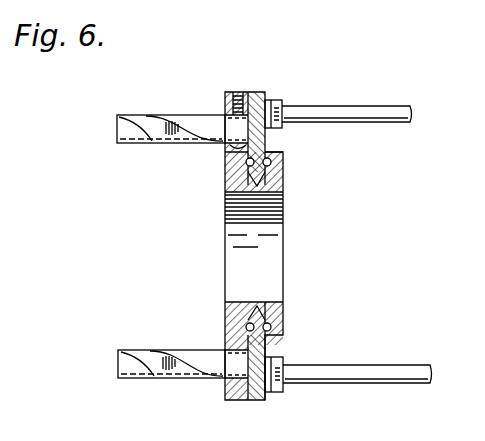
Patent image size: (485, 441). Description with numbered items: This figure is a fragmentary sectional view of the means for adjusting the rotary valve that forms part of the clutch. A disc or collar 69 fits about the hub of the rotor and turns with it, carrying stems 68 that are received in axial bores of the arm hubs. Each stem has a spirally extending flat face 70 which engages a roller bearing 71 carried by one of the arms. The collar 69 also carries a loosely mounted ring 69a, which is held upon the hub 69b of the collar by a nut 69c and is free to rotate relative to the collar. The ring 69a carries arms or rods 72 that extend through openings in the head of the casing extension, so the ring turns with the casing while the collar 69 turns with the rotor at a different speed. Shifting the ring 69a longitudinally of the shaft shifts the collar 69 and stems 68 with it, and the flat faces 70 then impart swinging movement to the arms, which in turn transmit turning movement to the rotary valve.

The stem 68 is at (201, 115).
The disc or collar 69 is at (225, 317).
The ring 69a is at (262, 93).
The hub of the collar 69b is at (266, 300).
The nut 69c is at (283, 331).
The spirally extending flat face 70 is at (186, 133).
The roller bearing 71 is at (268, 145).
The arm or rod 72 is at (357, 107).